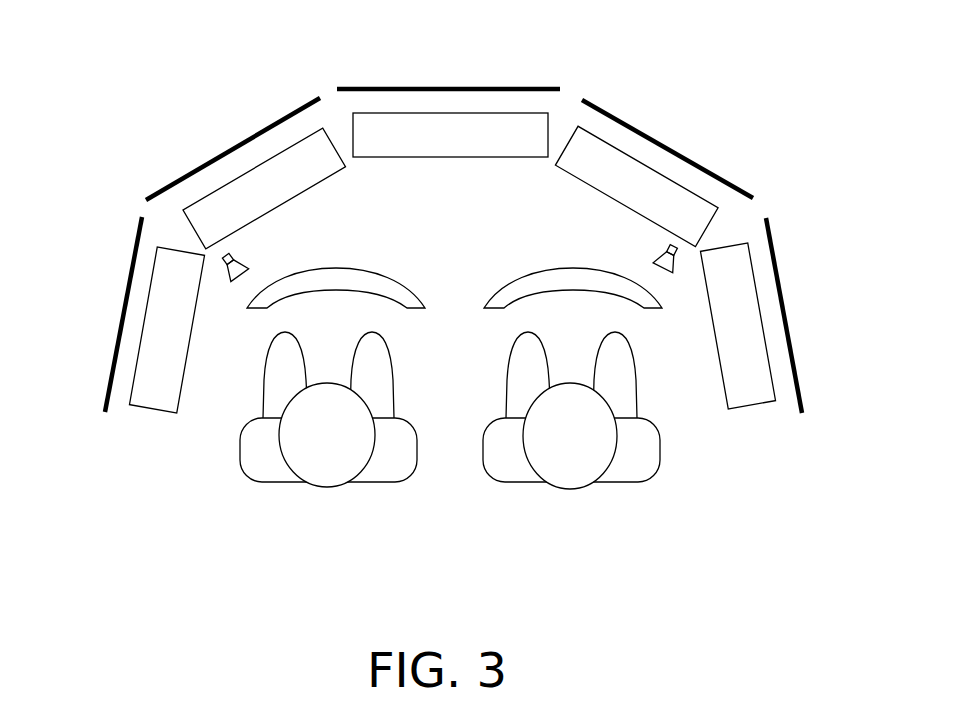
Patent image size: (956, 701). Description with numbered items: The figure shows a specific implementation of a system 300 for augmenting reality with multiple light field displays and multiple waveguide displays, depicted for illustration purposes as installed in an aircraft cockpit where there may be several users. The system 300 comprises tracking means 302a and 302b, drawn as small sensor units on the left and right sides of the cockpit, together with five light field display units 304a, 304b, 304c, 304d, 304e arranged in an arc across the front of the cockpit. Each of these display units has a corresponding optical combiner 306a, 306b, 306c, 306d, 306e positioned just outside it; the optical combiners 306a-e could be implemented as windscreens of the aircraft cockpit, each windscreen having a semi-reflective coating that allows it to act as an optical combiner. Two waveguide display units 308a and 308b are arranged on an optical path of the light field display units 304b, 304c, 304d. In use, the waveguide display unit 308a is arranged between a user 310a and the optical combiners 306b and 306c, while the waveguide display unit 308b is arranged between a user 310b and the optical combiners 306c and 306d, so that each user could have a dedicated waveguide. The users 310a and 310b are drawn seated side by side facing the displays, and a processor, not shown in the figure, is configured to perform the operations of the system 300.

The system 300 is at (220, 66).
The tracking means 302a is at (230, 299).
The tracking means 302b is at (683, 292).
The light field display unit 304a is at (166, 330).
The light field display unit 304b is at (264, 188).
The light field display unit 304c is at (450, 135).
The light field display unit 304d is at (636, 186).
The light field display unit 304e is at (737, 326).
The optical combiner 306a is at (94, 314).
The optical combiner 306b is at (203, 149).
The optical combiner 306c is at (476, 50).
The optical combiner 306d is at (693, 149).
The optical combiner 306e is at (811, 311).
The waveguide display unit 308a is at (355, 323).
The waveguide display unit 308b is at (547, 345).
The user 310a is at (317, 461).
The user 310b is at (563, 464).